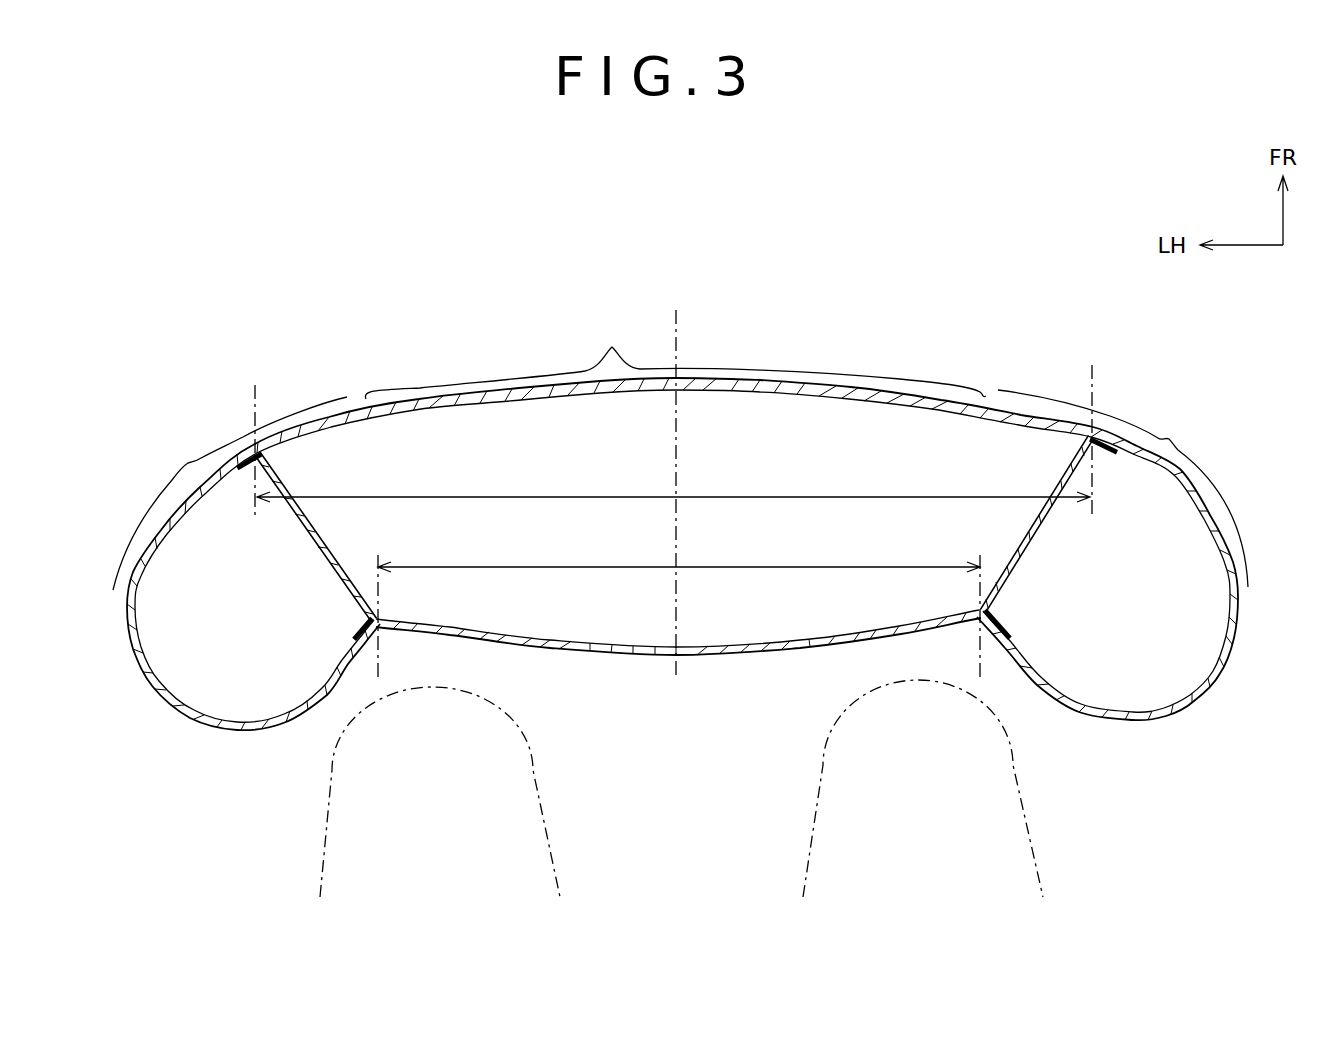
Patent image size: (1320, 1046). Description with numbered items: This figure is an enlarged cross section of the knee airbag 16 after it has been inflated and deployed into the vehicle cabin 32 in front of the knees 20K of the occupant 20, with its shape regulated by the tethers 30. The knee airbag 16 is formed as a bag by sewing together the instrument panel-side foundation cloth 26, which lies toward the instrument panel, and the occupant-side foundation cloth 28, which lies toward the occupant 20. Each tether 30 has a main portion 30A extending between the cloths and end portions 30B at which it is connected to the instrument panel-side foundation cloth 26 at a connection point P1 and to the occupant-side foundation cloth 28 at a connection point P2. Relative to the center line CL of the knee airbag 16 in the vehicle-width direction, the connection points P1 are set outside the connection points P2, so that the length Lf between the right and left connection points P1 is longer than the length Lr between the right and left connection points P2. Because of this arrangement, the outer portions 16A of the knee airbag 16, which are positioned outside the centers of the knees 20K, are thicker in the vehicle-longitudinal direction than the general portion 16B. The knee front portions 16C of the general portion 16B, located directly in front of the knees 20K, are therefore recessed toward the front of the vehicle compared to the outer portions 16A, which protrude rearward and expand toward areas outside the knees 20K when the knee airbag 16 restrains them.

The knee airbag 16 is at (568, 320).
The outer portions 16A is at (680, 490).
The general portion 16B is at (675, 356).
The knee front portions 16C is at (416, 632).
The instrument panel-side foundation cloth 26 is at (866, 388).
The occupant-side foundation cloth 28 is at (704, 657).
The tethers 30 is at (327, 580).
The inclined main portion of reinforcing member 30A is at (310, 533).
The end portions of reinforcing member 30B is at (247, 447).
The vehicle cabin 32 is at (680, 794).
The occupant 20 is at (1043, 838).
The knees 20K is at (432, 686).
The connection points P1 is at (252, 456).
The connection points P2 is at (370, 621).
The center line CL is at (676, 347).
The length between the right and left connection points P1 Lf is at (673, 474).
The length between the right and left connection points P2 Lr is at (679, 543).